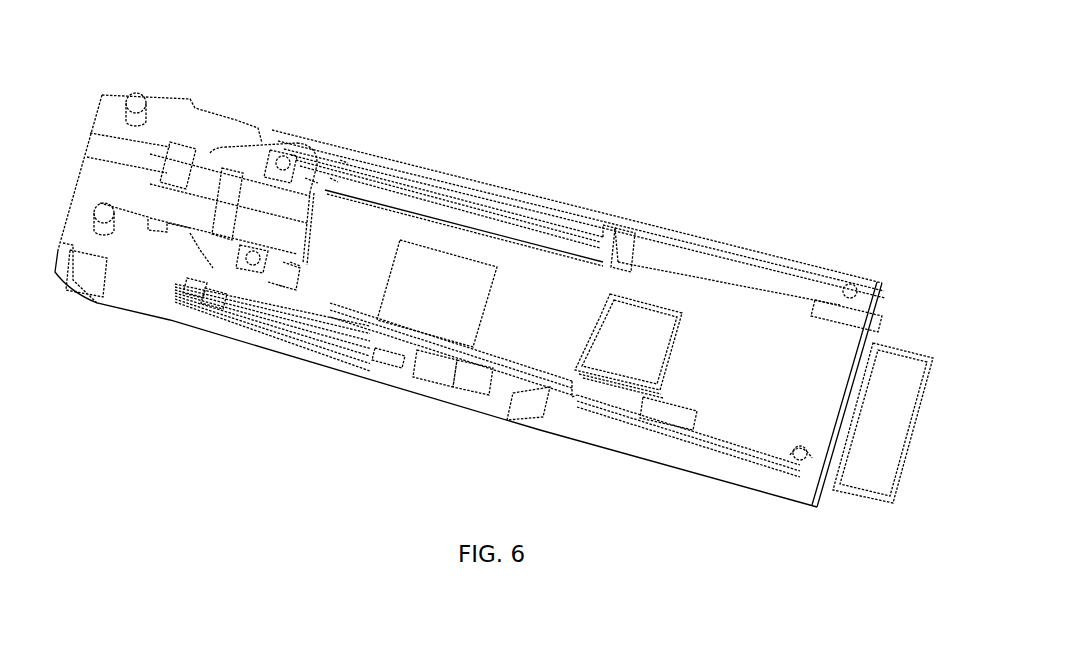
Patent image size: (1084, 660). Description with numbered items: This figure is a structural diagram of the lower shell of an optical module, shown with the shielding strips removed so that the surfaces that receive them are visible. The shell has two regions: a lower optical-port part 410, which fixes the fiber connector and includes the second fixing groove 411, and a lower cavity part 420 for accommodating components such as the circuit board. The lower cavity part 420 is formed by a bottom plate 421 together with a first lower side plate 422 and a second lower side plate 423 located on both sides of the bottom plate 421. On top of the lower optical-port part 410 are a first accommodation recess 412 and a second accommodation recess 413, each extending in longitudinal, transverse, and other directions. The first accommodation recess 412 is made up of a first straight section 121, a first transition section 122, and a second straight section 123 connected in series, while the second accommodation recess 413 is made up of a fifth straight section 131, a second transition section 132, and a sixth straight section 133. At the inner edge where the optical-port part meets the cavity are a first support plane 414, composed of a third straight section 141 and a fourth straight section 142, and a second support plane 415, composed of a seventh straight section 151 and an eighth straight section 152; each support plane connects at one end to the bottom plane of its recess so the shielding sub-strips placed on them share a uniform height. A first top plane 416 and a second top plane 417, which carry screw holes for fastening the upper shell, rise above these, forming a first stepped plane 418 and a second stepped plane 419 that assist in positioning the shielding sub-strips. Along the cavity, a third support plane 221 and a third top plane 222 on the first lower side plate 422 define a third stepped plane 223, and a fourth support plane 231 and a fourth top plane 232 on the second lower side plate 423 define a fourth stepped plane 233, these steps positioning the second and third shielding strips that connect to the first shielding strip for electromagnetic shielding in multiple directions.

The first straight section 121 is at (218, 152).
The first transition section 122 is at (268, 140).
The second straight section 123 is at (310, 165).
The fifth straight section 131 is at (193, 240).
The second transition section 132 is at (217, 275).
The sixth straight section 133 is at (268, 296).
The third straight section 141 is at (310, 172).
The fourth straight section 142 is at (335, 175).
The seventh straight section 151 is at (337, 250).
The eighth straight section 152 is at (268, 300).
The third support plane 221 is at (467, 200).
The third top plane 222 is at (423, 172).
The third stepped plane 223 is at (523, 207).
The fourth support plane 231 is at (487, 393).
The fourth top plane 232 is at (417, 393).
The fourth stepped plane 233 is at (580, 405).
The lower optical-port part 410 is at (185, 98).
The second fixing groove 411 is at (143, 190).
The first accommodation recess 412 is at (210, 125).
The second accommodation recess 413 is at (183, 265).
The first support plane 414 is at (326, 214).
The second support plane 415 is at (295, 255).
The first top plane 416 is at (345, 160).
The second top plane 417 is at (275, 286).
The first stepped plane 418 is at (329, 198).
The second stepped plane 419 is at (300, 273).
The lower cavity part 420 is at (655, 185).
The bottom plate 421 is at (723, 340).
The first lower side plate 422 is at (690, 262).
The second lower side plate 423 is at (640, 440).